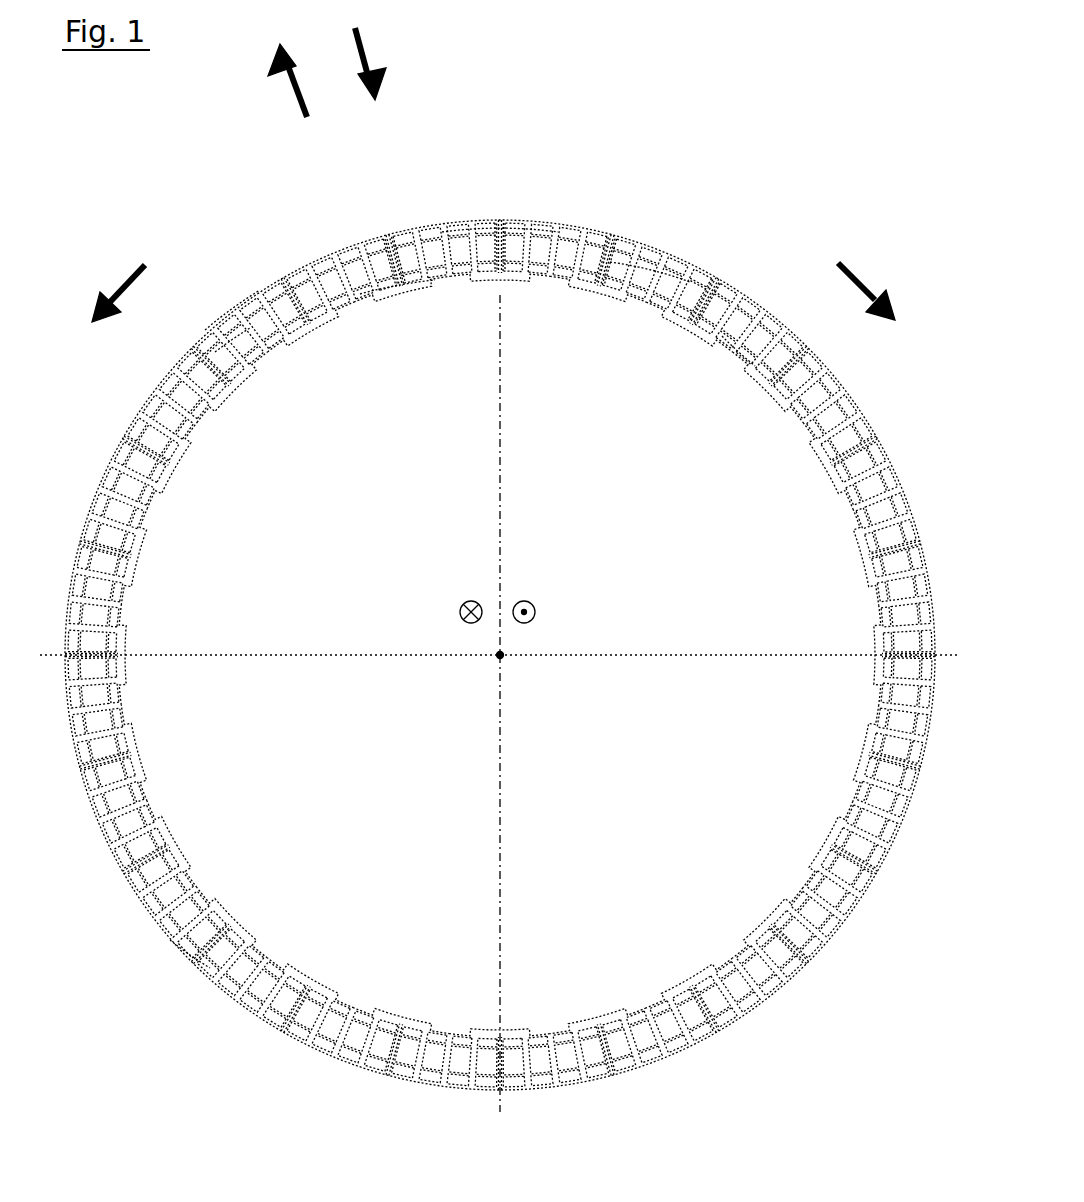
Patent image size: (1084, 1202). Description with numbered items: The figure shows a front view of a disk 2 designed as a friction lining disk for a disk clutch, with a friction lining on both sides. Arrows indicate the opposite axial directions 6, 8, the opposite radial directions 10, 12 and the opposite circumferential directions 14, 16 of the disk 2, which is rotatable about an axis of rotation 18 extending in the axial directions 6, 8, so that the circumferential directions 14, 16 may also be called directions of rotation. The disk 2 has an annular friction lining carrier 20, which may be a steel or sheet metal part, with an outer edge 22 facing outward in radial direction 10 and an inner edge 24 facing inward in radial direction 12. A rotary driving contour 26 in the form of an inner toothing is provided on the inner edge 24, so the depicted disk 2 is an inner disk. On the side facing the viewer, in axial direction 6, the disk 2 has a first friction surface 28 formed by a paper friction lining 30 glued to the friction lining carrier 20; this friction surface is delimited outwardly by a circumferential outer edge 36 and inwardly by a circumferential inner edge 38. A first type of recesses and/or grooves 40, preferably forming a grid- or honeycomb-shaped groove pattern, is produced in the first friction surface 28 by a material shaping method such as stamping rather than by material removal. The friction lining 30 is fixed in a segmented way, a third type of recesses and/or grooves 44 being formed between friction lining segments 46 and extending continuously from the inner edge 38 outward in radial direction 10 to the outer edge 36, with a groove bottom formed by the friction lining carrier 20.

The disk 2 is at (261, 1046).
The axial direction 6 is at (534, 606).
The axial direction 8 is at (461, 607).
The radial direction 10 is at (300, 90).
The radial direction 12 is at (365, 55).
The circumferential direction 14 is at (858, 280).
The circumferential direction 16 is at (135, 272).
The axis of rotation 18 is at (502, 657).
The friction lining carrier 20 is at (415, 292).
The outer edge 22 is at (190, 958).
The inner edge 24 is at (740, 350).
The rotary driving contour 26 is at (385, 295).
The first friction surface 28 is at (231, 312).
The friction lining 30 is at (231, 316).
The outer edge 36 is at (545, 222).
The inner edge 38 is at (650, 300).
The first type of recesses and/or grooves 40 is at (412, 264).
The third type of recesses and/or grooves 44 is at (368, 265).
The friction lining segments 46 is at (470, 235).